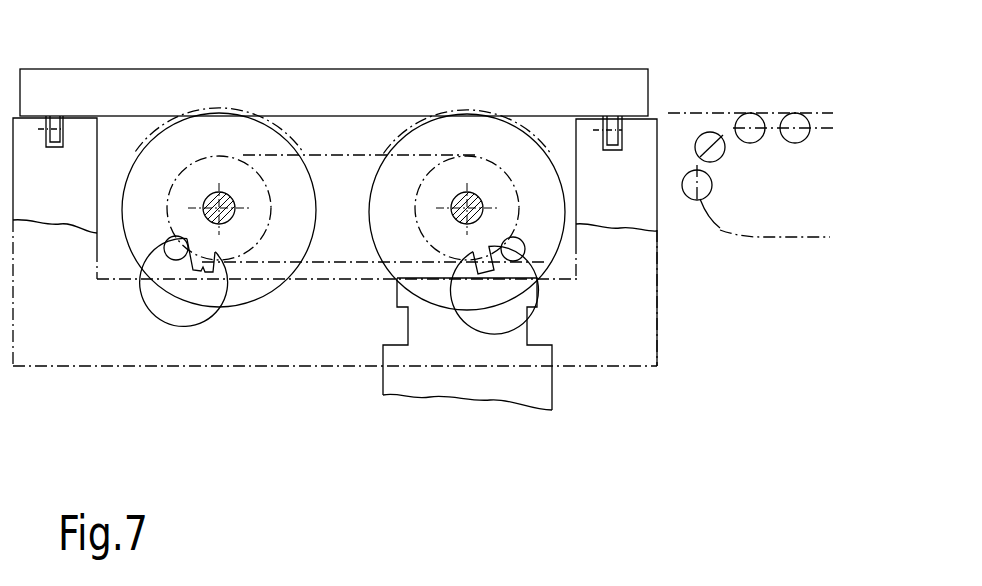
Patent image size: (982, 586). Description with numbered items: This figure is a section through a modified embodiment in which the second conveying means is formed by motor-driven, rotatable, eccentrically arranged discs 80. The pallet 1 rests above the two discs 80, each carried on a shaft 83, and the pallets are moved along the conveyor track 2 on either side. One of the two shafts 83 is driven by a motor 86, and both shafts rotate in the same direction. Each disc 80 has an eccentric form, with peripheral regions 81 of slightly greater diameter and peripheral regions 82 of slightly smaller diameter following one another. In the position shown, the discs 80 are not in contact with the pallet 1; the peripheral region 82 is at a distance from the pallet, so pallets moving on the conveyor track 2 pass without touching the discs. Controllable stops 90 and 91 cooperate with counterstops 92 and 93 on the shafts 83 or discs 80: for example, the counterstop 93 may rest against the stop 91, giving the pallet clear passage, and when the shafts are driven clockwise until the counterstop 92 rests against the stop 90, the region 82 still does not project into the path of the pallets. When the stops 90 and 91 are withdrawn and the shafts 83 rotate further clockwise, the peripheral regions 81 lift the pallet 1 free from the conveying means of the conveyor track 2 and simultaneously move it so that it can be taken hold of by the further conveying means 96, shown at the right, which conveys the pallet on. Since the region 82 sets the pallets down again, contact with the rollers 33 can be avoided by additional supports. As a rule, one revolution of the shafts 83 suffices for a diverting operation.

The pallet 1 is at (364, 83).
The conveyor track 2 is at (79, 169).
The rollers 33 is at (55, 120).
The discs 80 is at (152, 258).
The peripheral regions having a slightly greater diameter 81 is at (262, 298).
The peripheral regions having a slightly smaller diameter 82 is at (267, 127).
The shafts 83 is at (219, 197).
The motor 86 is at (477, 387).
The controllable stop 90 is at (179, 244).
The controllable stop 91 is at (522, 258).
The counterstop 92 is at (205, 273).
The counterstop 93 is at (486, 273).
The conveying means 96 is at (752, 117).